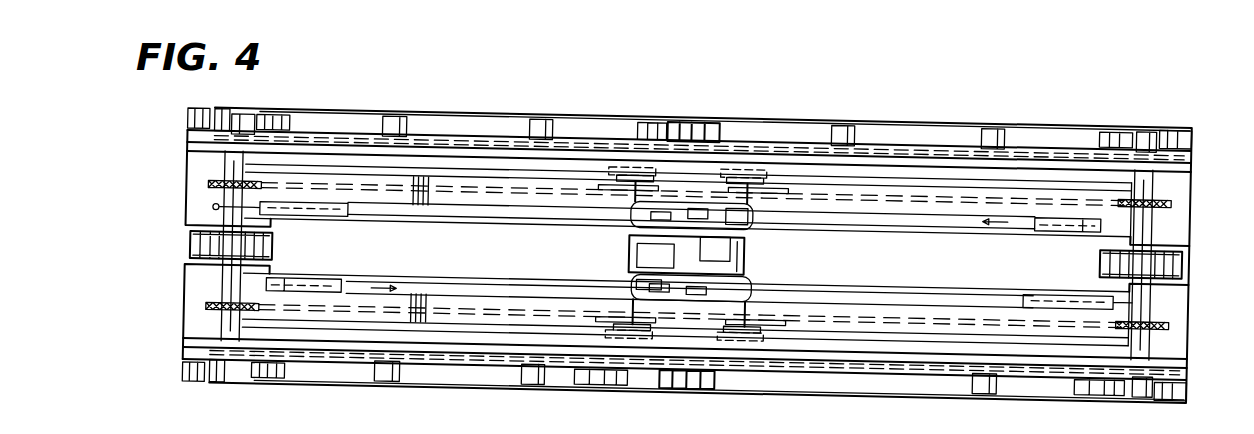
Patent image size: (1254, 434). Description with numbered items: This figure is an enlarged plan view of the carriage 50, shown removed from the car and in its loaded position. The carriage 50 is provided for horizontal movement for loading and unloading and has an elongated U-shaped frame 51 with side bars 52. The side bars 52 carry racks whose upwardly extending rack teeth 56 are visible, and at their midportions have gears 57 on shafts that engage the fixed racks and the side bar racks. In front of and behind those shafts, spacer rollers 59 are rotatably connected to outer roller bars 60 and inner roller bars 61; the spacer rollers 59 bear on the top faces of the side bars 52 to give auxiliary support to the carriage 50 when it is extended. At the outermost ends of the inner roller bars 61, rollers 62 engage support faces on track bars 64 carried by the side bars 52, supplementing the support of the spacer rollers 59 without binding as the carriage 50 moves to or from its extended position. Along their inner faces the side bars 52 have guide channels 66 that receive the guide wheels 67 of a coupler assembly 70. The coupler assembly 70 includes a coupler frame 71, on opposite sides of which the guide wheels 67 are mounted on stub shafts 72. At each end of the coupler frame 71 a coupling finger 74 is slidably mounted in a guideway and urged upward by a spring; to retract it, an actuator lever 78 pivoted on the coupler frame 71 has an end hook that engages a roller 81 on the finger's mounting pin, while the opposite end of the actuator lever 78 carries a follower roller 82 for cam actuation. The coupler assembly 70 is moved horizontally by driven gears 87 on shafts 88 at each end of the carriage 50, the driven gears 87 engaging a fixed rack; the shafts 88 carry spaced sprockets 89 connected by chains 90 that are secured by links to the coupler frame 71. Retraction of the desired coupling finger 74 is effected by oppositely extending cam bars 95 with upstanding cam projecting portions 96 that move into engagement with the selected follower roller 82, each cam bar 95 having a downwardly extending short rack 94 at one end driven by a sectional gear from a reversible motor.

The carriage 50 is at (439, 106).
The elongated U-shaped frame 51 is at (198, 178).
The side bars 52 is at (187, 144).
The rack teeth 56 is at (280, 118).
The gears 57 is at (708, 128).
The spacer rollers 59 is at (394, 118).
The outer roller bars 60 is at (935, 118).
The inner roller bars 61 is at (884, 152).
The rollers 62 is at (192, 125).
The track bars 64 is at (1040, 155).
The guide channels 66 is at (808, 172).
The guide wheels 67 is at (612, 178).
The coupler assembly 70 is at (630, 260).
The coupler frame 71 is at (740, 270).
The stub shafts 72 is at (633, 332).
The coupling finger 74 is at (665, 265).
The actuator lever 78 is at (648, 218).
The roller 81 is at (745, 230).
The follower roller 82 is at (660, 222).
The driven gears 87 is at (192, 243).
The shafts 88 is at (228, 280).
The sprockets 89 is at (212, 180).
The chains 90 is at (505, 212).
The short rack 94 is at (348, 215).
The cam bars 95 is at (948, 238).
The cam projecting portions 96 is at (320, 280).